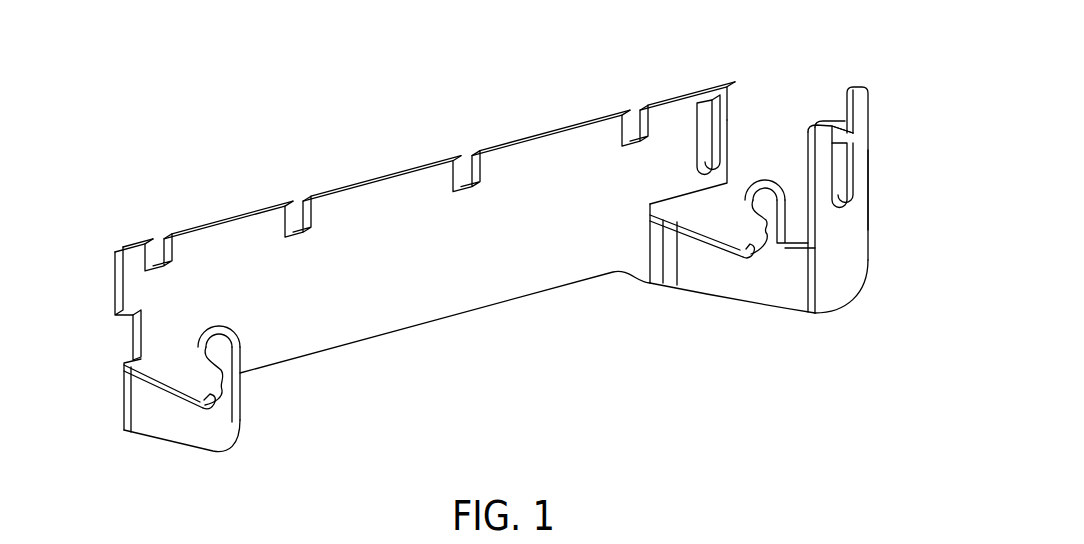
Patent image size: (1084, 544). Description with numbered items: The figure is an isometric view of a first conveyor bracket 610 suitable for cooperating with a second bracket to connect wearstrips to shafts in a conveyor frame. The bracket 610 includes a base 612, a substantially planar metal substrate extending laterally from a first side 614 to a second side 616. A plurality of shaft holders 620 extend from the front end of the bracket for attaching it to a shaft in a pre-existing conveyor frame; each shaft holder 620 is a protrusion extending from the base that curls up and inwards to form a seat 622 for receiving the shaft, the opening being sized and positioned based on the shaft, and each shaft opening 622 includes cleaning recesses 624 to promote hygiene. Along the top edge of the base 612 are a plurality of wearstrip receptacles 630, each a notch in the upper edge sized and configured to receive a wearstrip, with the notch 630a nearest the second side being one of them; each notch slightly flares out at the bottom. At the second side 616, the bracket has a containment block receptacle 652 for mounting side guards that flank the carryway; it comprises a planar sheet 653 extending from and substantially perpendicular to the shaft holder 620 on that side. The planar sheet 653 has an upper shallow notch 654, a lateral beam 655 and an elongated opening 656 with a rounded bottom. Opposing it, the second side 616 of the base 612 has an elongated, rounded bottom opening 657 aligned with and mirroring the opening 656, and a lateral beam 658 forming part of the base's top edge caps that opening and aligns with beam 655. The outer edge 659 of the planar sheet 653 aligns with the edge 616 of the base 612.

The conveyor bracket 610 is at (352, 100).
The base 612 is at (340, 335).
The first side 614 is at (120, 343).
The second side 616 is at (743, 96).
The shaft holder 620 is at (265, 422).
The seat 622 is at (155, 440).
The cleaning recess 624 is at (200, 438).
The wearstrip receptacle 630 is at (154, 236).
The notch 630a is at (626, 104).
The containment block receptacle 652 is at (885, 164).
The planar sheet 653 is at (855, 258).
The upper shallow notch 654 is at (840, 85).
The lateral beam 655 is at (850, 135).
The elongated opening 656 is at (848, 187).
The elongated rounded bottom opening 657 is at (730, 93).
The lateral beam 658 is at (702, 125).
The outer edge 659 is at (885, 180).